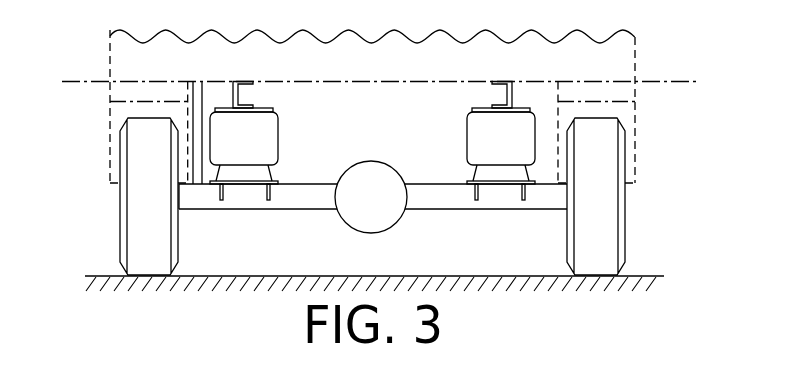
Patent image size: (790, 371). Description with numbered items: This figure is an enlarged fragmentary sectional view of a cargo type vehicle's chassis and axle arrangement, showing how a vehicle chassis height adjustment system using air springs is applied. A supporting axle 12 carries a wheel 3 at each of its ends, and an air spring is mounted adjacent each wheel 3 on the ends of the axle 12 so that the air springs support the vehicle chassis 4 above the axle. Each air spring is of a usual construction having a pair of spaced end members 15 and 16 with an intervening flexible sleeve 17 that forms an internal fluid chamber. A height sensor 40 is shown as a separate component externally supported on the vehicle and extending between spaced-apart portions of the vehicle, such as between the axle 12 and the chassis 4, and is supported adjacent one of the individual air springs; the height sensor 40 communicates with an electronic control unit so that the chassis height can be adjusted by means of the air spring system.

The wheel 3 is at (137, 228).
The vehicle chassis 4 is at (110, 33).
The rear axle 12 is at (432, 194).
The end member 15 is at (268, 106).
The end member 16 is at (243, 172).
The flexible sleeve 17 is at (268, 137).
The height sensor 40 is at (198, 87).